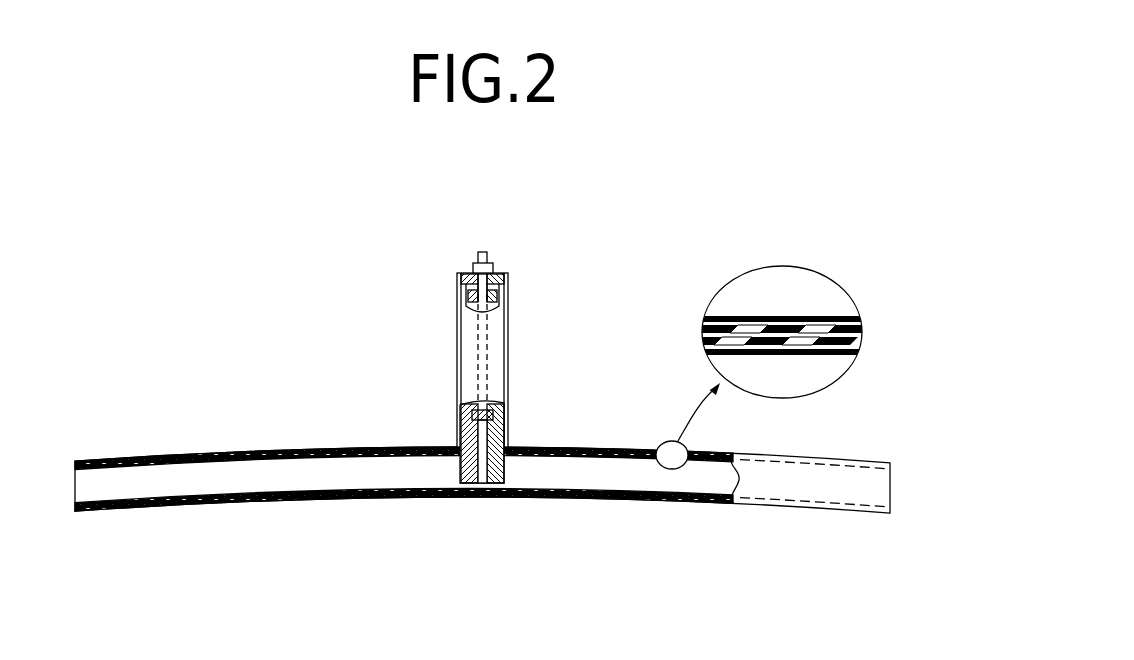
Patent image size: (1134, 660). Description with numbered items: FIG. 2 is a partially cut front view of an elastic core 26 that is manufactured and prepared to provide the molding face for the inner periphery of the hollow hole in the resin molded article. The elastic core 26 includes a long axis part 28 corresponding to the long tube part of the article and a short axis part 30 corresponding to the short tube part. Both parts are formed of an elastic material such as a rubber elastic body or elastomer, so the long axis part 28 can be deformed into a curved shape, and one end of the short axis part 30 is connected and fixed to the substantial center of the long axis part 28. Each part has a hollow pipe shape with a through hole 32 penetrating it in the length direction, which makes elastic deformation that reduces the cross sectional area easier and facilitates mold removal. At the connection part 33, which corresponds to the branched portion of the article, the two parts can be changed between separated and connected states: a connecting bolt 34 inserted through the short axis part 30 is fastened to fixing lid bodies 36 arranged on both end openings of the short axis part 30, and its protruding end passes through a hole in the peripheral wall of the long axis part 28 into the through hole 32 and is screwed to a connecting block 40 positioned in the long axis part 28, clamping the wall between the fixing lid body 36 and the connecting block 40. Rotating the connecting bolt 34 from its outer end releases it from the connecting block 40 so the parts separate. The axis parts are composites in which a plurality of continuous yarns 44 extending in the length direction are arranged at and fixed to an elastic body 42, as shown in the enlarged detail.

The elastic core 26 is at (606, 289).
The long axis part 28 is at (787, 480).
The short axis part 30 is at (473, 340).
The through hole 32 is at (501, 352).
The connection part 33 is at (453, 442).
The connecting bolt 34 is at (485, 256).
The fixing lid body 36 is at (470, 283).
The connecting block 40 is at (467, 466).
The elastic body 42 is at (838, 348).
The continuous yarns 44 is at (545, 494).